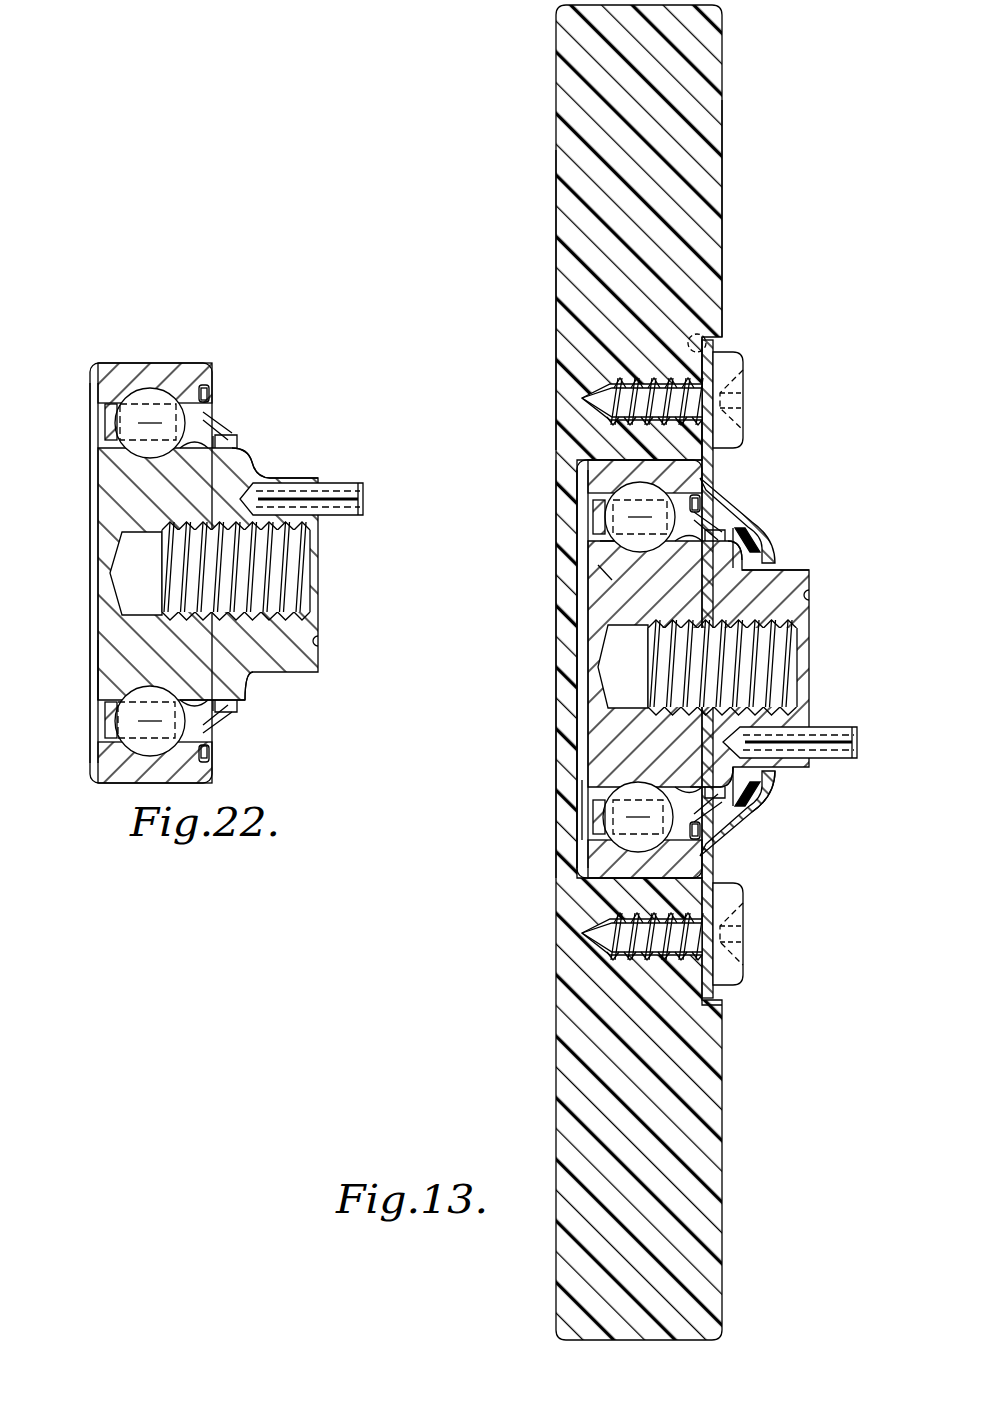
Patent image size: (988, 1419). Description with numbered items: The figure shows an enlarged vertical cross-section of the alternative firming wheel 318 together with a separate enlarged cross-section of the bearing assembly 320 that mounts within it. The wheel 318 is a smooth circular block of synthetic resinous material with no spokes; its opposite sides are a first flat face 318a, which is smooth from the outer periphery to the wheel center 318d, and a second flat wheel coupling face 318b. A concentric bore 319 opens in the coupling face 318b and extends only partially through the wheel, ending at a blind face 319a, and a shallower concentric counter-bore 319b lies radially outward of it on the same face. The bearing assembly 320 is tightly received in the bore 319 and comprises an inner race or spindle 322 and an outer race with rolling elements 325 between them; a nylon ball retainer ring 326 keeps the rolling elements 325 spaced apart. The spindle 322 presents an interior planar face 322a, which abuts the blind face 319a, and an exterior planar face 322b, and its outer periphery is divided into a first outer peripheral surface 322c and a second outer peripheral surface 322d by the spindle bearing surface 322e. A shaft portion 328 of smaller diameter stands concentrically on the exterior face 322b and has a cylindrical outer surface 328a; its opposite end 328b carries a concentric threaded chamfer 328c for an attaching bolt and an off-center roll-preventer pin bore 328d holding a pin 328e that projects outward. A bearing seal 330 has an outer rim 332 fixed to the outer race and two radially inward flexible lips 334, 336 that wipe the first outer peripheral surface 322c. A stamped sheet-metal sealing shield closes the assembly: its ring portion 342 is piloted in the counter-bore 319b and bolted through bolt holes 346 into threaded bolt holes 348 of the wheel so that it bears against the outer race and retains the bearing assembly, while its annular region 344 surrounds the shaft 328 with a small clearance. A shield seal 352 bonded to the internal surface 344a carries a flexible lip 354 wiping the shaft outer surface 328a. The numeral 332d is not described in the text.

In FIG. 13, the firming wheel 318 is at (525, 180).
In FIG. 13, the first flat face 318a is at (557, 292).
In FIG. 13, the second flat wheel coupling face 318b is at (722, 254).
In FIG. 13, the wheel center 318d is at (560, 648).
In FIG. 13, the concentric bore 319 is at (578, 481).
In FIG. 13, the blind face 319a is at (580, 799).
In FIG. 13, the concentric counter-bore 319b is at (704, 334).
In FIG. 22, the bearing assembly 320 is at (162, 345).
In FIG. 13, the bearing assembly 320 is at (828, 642).
In FIG. 22, the inner race or spindle 322 is at (120, 490).
In FIG. 13, the inner race or spindle 322 is at (586, 576).
In FIG. 22, the spindle interior face 322a is at (100, 545).
In FIG. 13, the spindle interior face 322a is at (580, 736).
In FIG. 22, the spindle exterior face 322b is at (242, 460).
In FIG. 13, the spindle exterior face 322b is at (706, 786).
In FIG. 22, the first outer peripheral surface 322c is at (194, 684).
In FIG. 13, the first outer peripheral surface 322c is at (688, 632).
In FIG. 22, the second outer peripheral surface 322d is at (100, 665).
In FIG. 13, the spindle bearing surface 322e is at (632, 548).
In FIG. 22, the rolling elements 325 is at (148, 395).
In FIG. 13, the rolling elements 325 is at (605, 822).
In FIG. 22, the nylon ball retainer ring 326 is at (262, 682).
In FIG. 22, the shaft portion 328 is at (275, 580).
In FIG. 13, the shaft portion 328 is at (811, 616).
In FIG. 22, the cylindrical outer surface 328a is at (292, 478).
In FIG. 13, the cylindrical outer surface 328a is at (776, 571).
In FIG. 22, the opposite end 328b is at (322, 645).
In FIG. 13, the opposite end 328b is at (813, 596).
In FIG. 22, the concentric threaded chamfer 328c is at (275, 585).
In FIG. 13, the concentric threaded chamfer 328c is at (748, 664).
In FIG. 13, the roll-preventer pin bore 328d is at (812, 731).
In FIG. 22, the pin 328e is at (345, 492).
In FIG. 13, the pin 328e is at (850, 741).
In FIG. 22, the bearing seal 330 is at (224, 440).
In FIG. 13, the bearing seal 330 is at (712, 500).
In FIG. 22, the outer rim 332 is at (216, 428).
In FIG. 13, the outer rim 332 is at (714, 500).
In FIG. 13, the washer portion 332d is at (612, 580).
In FIG. 22, the flexible lip 334 is at (165, 454).
In FIG. 13, the flexible lip 334 is at (720, 516).
In FIG. 22, the flexible lip 336 is at (216, 456).
In FIG. 13, the flexible lip 336 is at (742, 530).
In FIG. 13, the ring portion 342 is at (710, 870).
In FIG. 13, the annular region 344 is at (750, 823).
In FIG. 13, the internal surface 344a is at (757, 806).
In FIG. 13, the bolt holes 346 is at (724, 920).
In FIG. 13, the threaded bolt holes 348 is at (652, 958).
In FIG. 13, the shield seal 352 is at (762, 551).
In FIG. 13, the flexible lip 354 is at (770, 791).